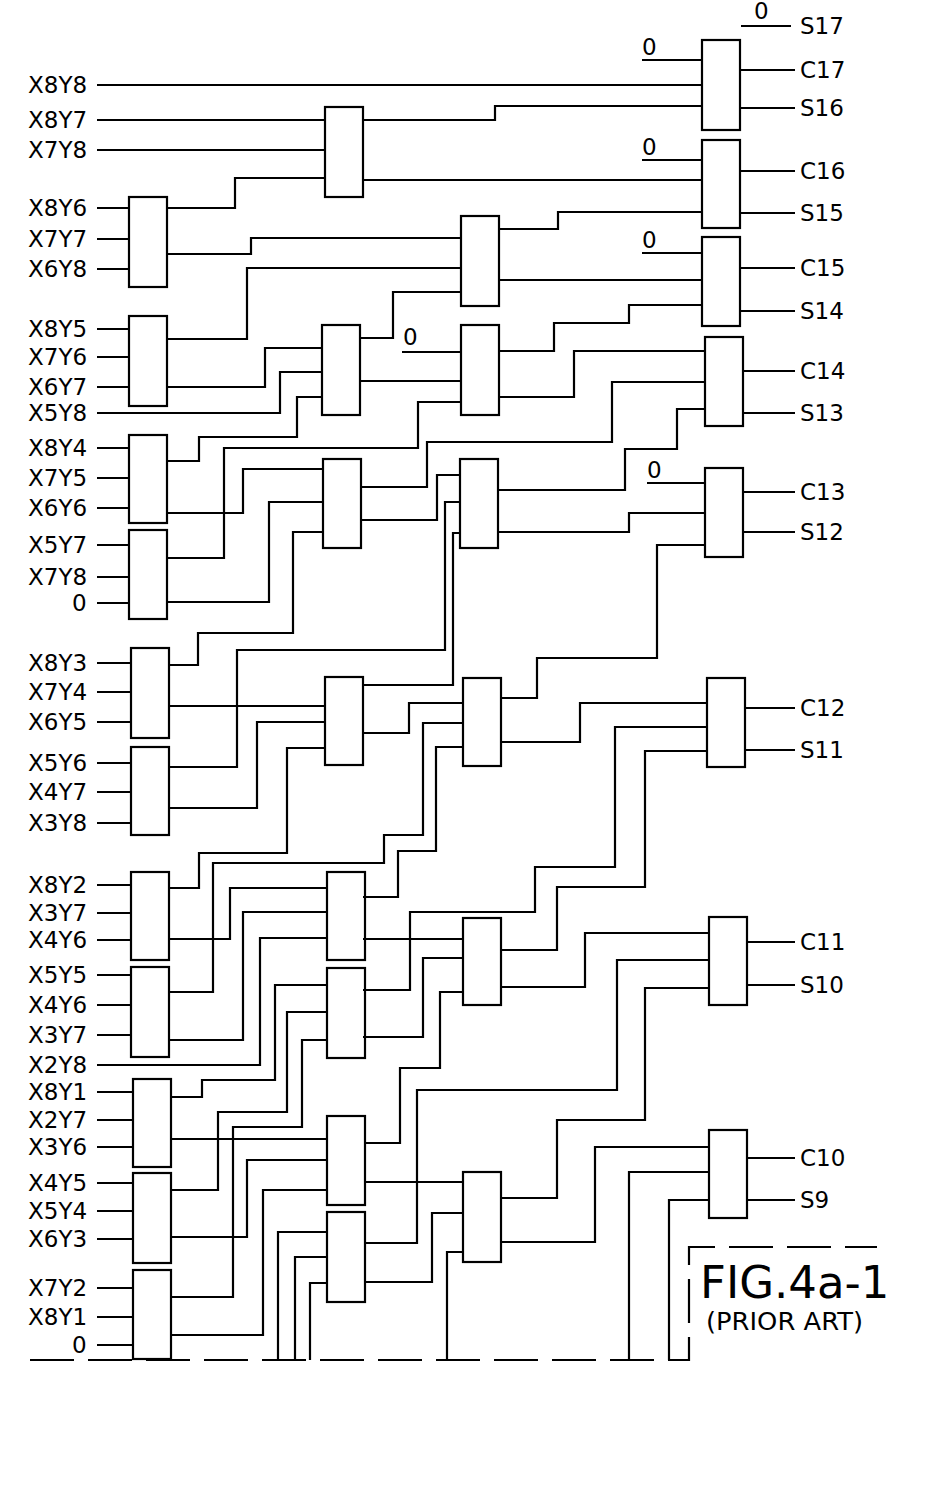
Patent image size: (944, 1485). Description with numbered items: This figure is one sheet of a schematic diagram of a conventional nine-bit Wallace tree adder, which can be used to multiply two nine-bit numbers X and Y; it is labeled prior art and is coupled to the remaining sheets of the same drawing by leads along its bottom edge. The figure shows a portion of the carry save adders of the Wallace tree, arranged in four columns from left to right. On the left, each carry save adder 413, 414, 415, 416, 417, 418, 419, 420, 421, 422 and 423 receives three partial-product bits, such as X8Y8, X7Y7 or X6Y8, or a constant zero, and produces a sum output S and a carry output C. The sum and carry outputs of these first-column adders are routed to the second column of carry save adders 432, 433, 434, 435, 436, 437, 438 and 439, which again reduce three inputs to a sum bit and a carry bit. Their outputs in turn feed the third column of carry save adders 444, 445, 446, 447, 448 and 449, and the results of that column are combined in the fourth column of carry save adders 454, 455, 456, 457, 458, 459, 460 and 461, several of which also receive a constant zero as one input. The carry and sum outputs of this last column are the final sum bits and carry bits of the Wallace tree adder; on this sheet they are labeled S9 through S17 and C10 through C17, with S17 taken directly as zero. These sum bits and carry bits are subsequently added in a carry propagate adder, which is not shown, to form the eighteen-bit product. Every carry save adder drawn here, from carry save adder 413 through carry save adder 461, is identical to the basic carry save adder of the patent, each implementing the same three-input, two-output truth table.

The carry save adder 413 is at (164, 1289).
The carry save adder 414 is at (164, 1193).
The carry save adder 415 is at (164, 1098).
The carry save adder 416 is at (162, 987).
The carry save adder 417 is at (162, 891).
The carry save adder 418 is at (162, 766).
The carry save adder 419 is at (162, 668).
The carry save adder 420 is at (160, 549).
The carry save adder 421 is at (160, 454).
The carry save adder 422 is at (160, 336).
The carry save adder 423 is at (160, 217).
The carry save adder 432 is at (358, 1232).
The carry save adder 433 is at (358, 1135).
The carry save adder 434 is at (358, 988).
The carry save adder 435 is at (358, 891).
The carry save adder 436 is at (356, 696).
The carry save adder 437 is at (354, 478).
The carry save adder 438 is at (353, 345).
The carry save adder 439 is at (356, 127).
The carry save adder 444 is at (494, 1192).
The carry save adder 445 is at (494, 936).
The carry save adder 446 is at (494, 697).
The carry save adder 447 is at (491, 478).
The carry save adder 448 is at (492, 345).
The carry save adder 449 is at (492, 236).
The carry save adder 454 is at (740, 1149).
The carry save adder 455 is at (740, 936).
The carry save adder 456 is at (738, 697).
The carry save adder 457 is at (736, 487).
The carry save adder 458 is at (736, 356).
The carry save adder 459 is at (733, 256).
The carry save adder 460 is at (733, 159).
The carry save adder 461 is at (733, 60).